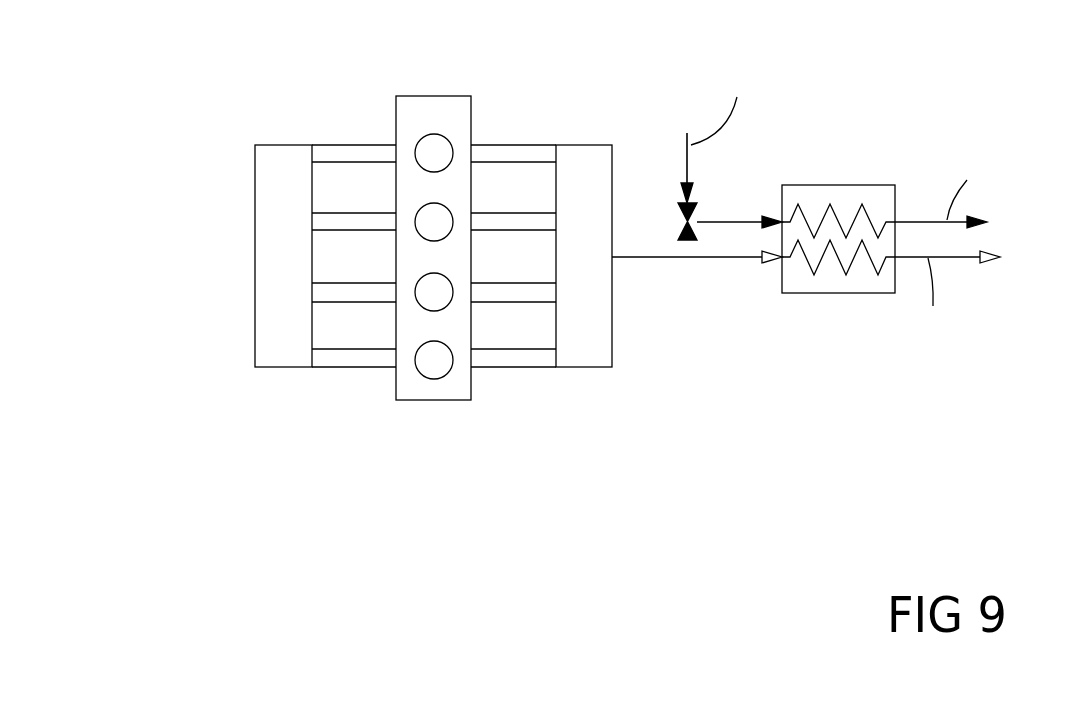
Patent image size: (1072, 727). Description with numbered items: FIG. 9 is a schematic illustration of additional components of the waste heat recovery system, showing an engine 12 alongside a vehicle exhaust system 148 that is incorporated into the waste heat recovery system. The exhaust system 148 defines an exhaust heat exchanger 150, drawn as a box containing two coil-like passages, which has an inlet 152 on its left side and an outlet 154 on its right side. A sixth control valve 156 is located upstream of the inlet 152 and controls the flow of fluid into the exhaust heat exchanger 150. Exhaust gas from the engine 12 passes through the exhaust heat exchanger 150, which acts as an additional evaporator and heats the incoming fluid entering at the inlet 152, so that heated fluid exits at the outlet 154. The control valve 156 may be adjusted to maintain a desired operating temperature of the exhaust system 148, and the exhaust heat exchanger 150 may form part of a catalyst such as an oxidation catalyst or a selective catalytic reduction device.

The engine 12 is at (540, 82).
The vehicle exhaust system 148 is at (814, 245).
The exhaust heat exchanger 150 is at (860, 185).
The inlet 152 is at (782, 220).
The outlet 154 is at (897, 222).
The sixth control valve 156 is at (698, 211).